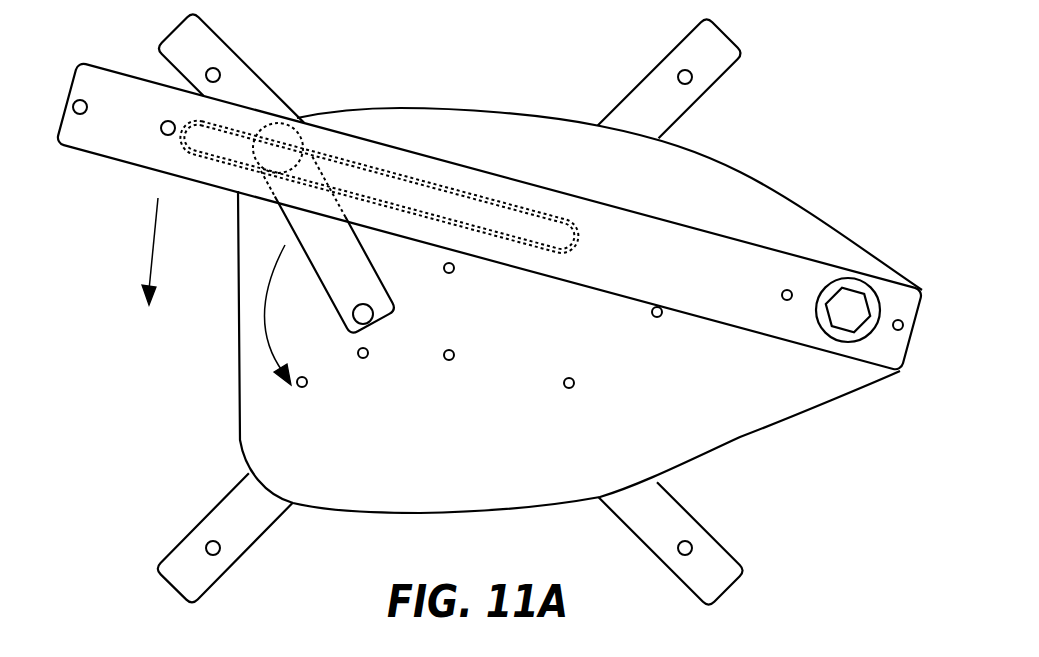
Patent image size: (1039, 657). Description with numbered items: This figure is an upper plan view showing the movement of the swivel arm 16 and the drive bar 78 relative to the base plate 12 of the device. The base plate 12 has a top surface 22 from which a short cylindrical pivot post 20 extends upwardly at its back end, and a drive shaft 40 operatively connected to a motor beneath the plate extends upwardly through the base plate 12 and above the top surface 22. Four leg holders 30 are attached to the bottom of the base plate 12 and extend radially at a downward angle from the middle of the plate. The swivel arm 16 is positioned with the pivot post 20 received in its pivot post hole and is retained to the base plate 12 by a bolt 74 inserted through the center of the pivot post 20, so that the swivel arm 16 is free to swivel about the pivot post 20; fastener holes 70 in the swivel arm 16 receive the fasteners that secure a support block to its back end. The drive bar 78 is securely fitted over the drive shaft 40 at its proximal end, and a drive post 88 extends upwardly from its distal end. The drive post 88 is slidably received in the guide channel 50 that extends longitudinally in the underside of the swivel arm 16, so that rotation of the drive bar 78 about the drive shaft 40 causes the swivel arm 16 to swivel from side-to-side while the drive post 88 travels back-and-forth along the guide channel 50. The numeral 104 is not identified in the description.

The base plate 12 is at (430, 108).
The swivel arm 16 is at (743, 257).
The pivot post 20 is at (857, 283).
The top surface 22 is at (492, 446).
The leg holders 30 is at (223, 43).
The drive shaft 40 is at (360, 320).
The guide channel 50 is at (465, 187).
The fastener holes 70 is at (898, 330).
The bolt 74 is at (852, 303).
The drive bar 78 is at (293, 230).
The drive post 88 is at (288, 163).
The mounting holes 104 is at (163, 133).